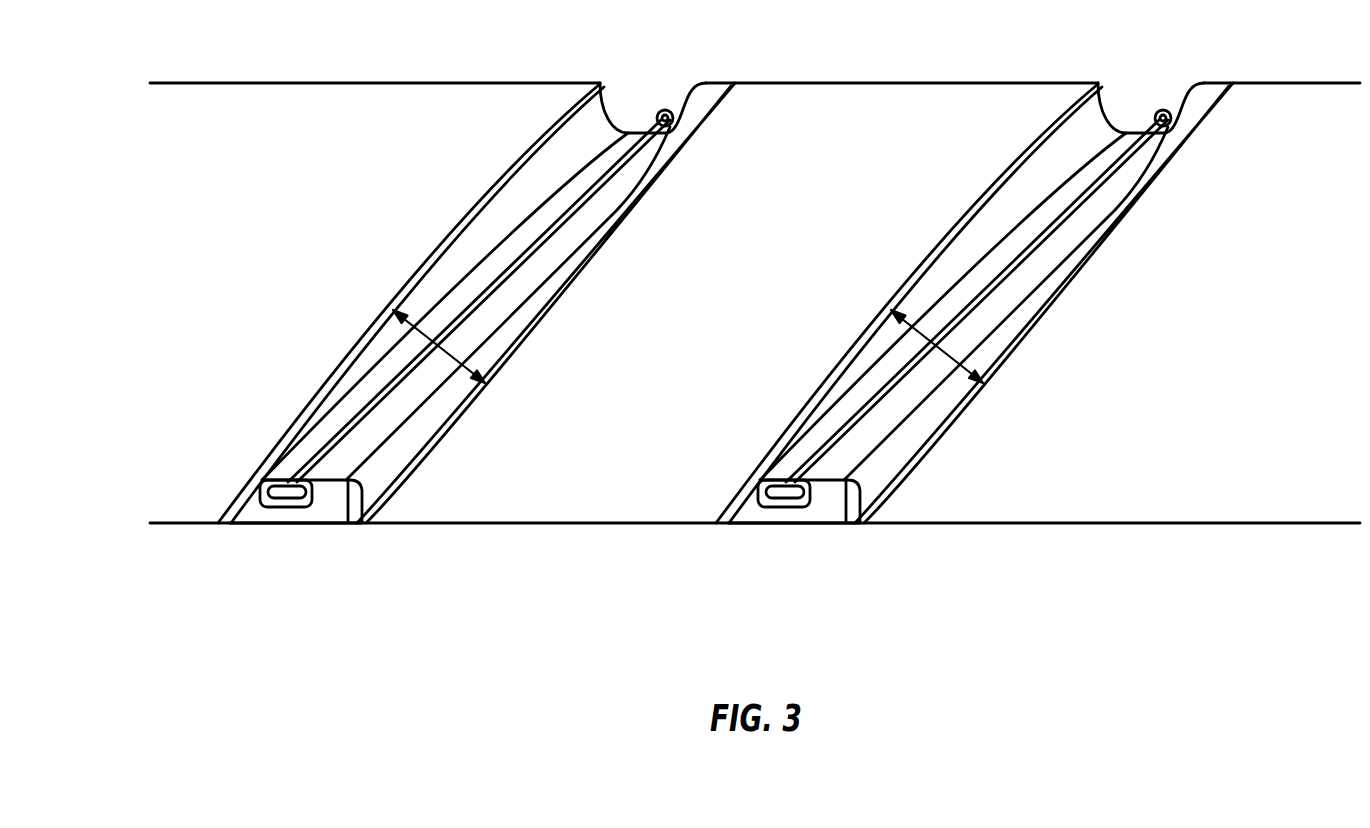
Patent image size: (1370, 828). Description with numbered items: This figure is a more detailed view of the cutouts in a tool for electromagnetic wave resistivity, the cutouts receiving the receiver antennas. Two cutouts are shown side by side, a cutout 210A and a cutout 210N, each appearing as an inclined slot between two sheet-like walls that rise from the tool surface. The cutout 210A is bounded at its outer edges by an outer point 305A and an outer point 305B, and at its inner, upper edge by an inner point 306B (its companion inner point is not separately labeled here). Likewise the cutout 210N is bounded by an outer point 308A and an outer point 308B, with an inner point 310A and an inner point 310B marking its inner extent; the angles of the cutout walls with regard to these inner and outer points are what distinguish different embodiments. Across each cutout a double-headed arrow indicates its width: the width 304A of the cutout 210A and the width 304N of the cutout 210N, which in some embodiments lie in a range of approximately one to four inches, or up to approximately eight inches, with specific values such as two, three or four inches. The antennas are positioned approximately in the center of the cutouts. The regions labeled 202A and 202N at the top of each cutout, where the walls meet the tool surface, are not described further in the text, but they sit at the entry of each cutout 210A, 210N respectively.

The panel section N 202N is at (627, 133).
The panel section A 202A is at (1107, 87).
The outer point 308A is at (540, 138).
The outer point 308B is at (606, 252).
The outer point 305A is at (921, 303).
The outer point 305B is at (1038, 303).
The inner point 310A is at (493, 248).
The inner point 310B is at (673, 110).
The inner point 306B is at (1241, 81).
The width 304N is at (428, 338).
The width 304A is at (890, 322).
The cutout 210N is at (376, 427).
The cutout 210A is at (867, 475).